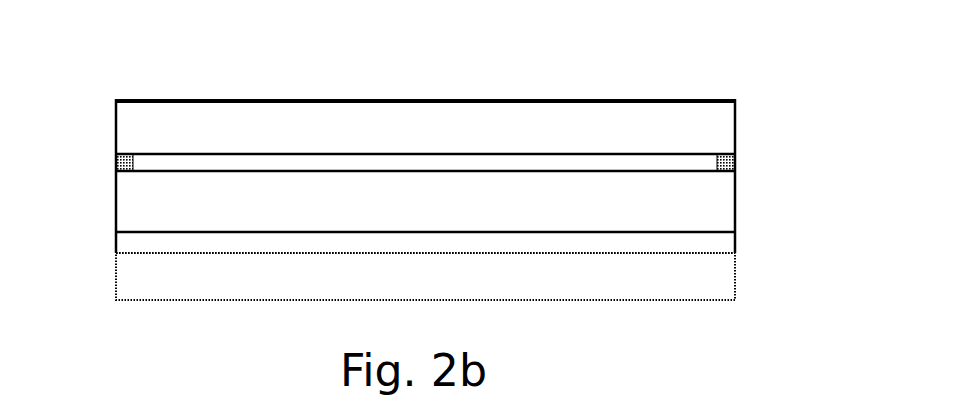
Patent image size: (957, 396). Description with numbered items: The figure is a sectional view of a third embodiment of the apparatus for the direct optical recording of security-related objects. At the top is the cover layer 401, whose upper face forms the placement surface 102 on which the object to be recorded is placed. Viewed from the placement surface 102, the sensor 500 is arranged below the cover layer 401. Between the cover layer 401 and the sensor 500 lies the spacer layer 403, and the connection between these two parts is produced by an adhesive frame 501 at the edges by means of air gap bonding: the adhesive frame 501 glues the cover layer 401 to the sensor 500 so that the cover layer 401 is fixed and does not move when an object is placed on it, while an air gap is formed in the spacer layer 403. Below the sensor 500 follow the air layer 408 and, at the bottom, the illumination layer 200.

The placement surface 102 is at (722, 100).
The cover layer 401 is at (705, 125).
The spacer layer 403 is at (703, 160).
The adhesive frame 501 is at (122, 170).
The sensor 500 is at (707, 202).
The air layer 408 is at (707, 243).
The illumination layer 200 is at (707, 273).